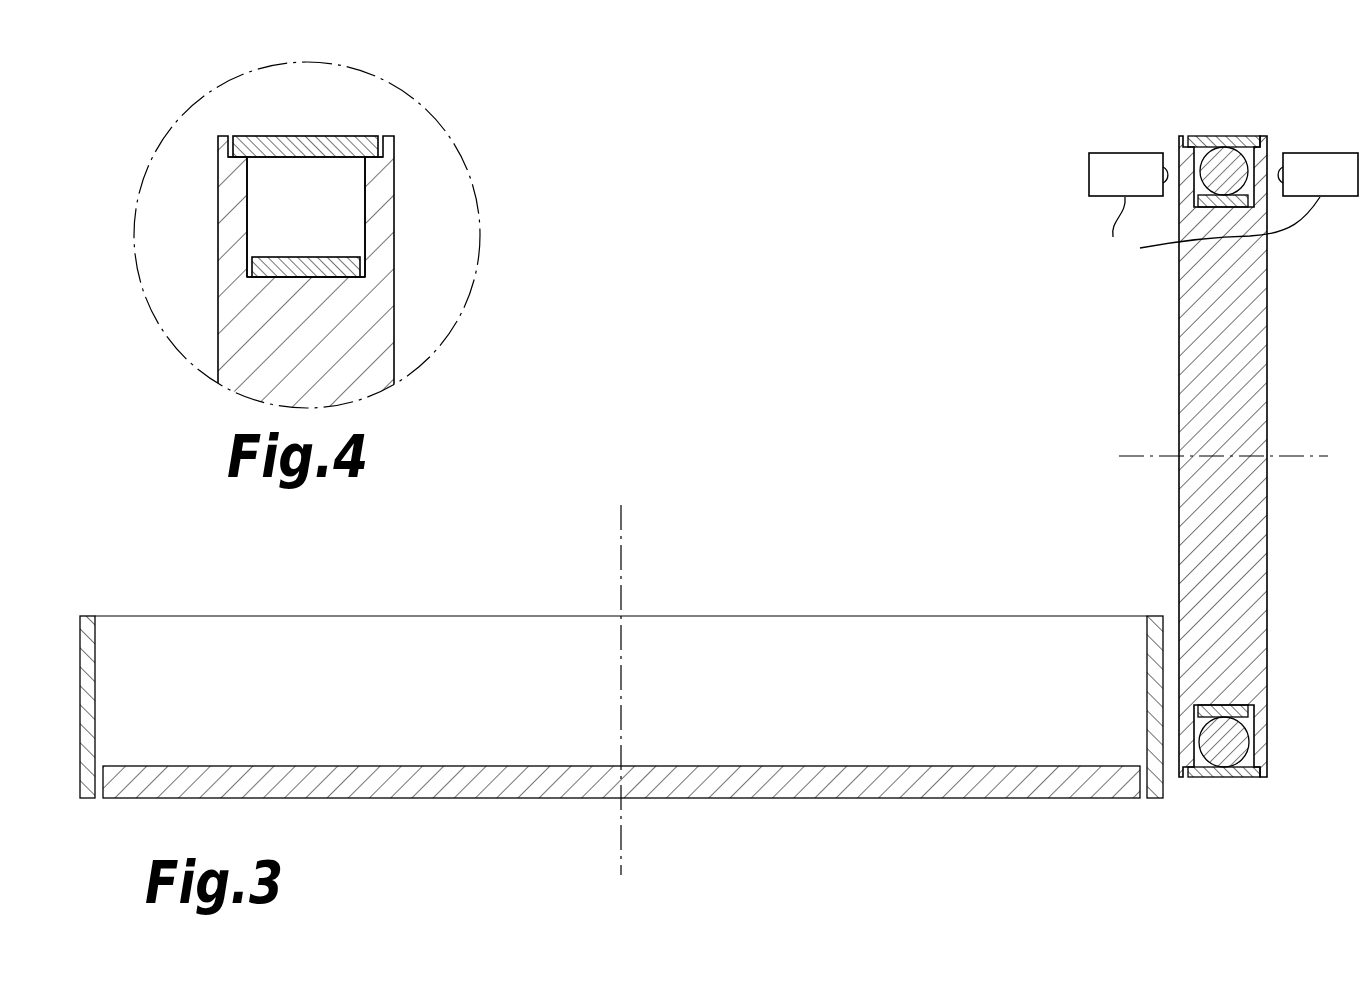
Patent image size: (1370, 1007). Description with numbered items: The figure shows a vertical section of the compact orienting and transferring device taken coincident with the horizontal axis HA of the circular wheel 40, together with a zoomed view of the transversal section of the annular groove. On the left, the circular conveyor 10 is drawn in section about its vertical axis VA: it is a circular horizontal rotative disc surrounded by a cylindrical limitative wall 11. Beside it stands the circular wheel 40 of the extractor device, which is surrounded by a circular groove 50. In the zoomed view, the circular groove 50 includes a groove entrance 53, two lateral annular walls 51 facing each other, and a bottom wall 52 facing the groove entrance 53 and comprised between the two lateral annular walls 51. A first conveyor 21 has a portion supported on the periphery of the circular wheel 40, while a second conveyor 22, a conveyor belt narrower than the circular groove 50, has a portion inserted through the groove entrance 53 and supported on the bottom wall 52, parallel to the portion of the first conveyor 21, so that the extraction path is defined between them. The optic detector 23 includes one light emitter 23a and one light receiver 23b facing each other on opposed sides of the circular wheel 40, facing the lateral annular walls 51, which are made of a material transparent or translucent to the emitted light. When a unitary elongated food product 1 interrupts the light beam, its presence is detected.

In FIG. 3, the unitary elongated food product 1 is at (1222, 167).
In FIG. 3, the circular conveyor 10 is at (998, 764).
In FIG. 3, the cylindrical limitative wall 11 is at (1147, 707).
In FIG. 3, the first conveyor 21 is at (1205, 140).
In FIG. 4, the first conveyor 21 is at (318, 146).
In FIG. 3, the second conveyor 22 is at (1237, 157).
In FIG. 4, the second conveyor 22 is at (310, 266).
In FIG. 3, the optic detector 23 is at (1209, 232).
In FIG. 3, the light emitter 23a is at (1128, 174).
In FIG. 3, the light receiver 23b is at (1318, 174).
In FIG. 3, the circular wheel 40 is at (1213, 348).
In FIG. 4, the circular wheel 40 is at (306, 283).
In FIG. 4, the circular groove 50 is at (306, 217).
In FIG. 4, the lateral annular walls 51 is at (245, 217).
In FIG. 4, the bottom wall 52 is at (287, 276).
In FIG. 4, the groove entrance 53 is at (293, 153).
In FIG. 3, the horizontal axis HA is at (1135, 455).
In FIG. 3, the vertical axis VA is at (621, 532).